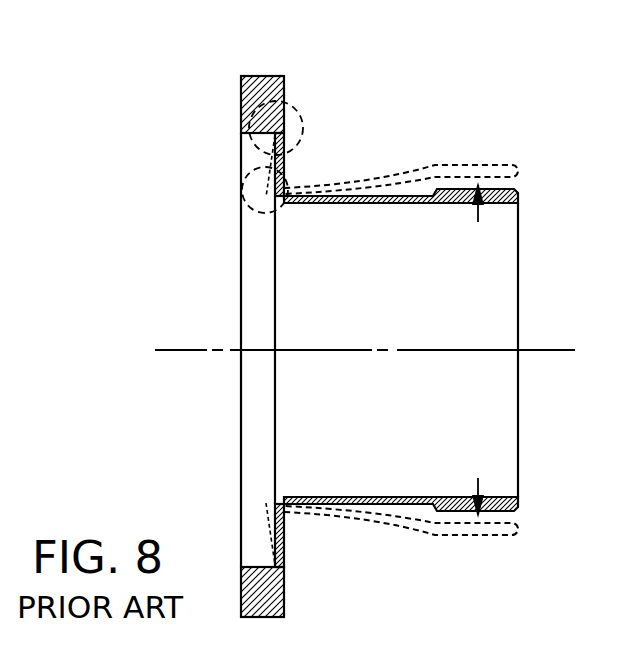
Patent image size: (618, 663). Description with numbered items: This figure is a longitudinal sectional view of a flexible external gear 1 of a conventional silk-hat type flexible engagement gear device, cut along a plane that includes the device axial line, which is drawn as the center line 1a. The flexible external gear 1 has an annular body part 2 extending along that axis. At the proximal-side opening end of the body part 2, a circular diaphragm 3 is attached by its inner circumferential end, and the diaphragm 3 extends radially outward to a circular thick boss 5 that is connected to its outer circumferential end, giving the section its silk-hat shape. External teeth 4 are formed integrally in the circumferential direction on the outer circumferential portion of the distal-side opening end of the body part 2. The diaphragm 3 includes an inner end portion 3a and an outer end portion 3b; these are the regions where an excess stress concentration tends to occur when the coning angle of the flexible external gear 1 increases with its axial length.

The flexible external gear 1 is at (410, 116).
The center axis of pipe joint 1a is at (535, 351).
The annular body part 2 is at (385, 188).
The circular diaphragm 3 is at (284, 150).
The inner end portion 3a is at (241, 205).
The outer end portion 3b is at (268, 133).
The external teeth 4 is at (510, 180).
The circular thick boss 5 is at (263, 76).